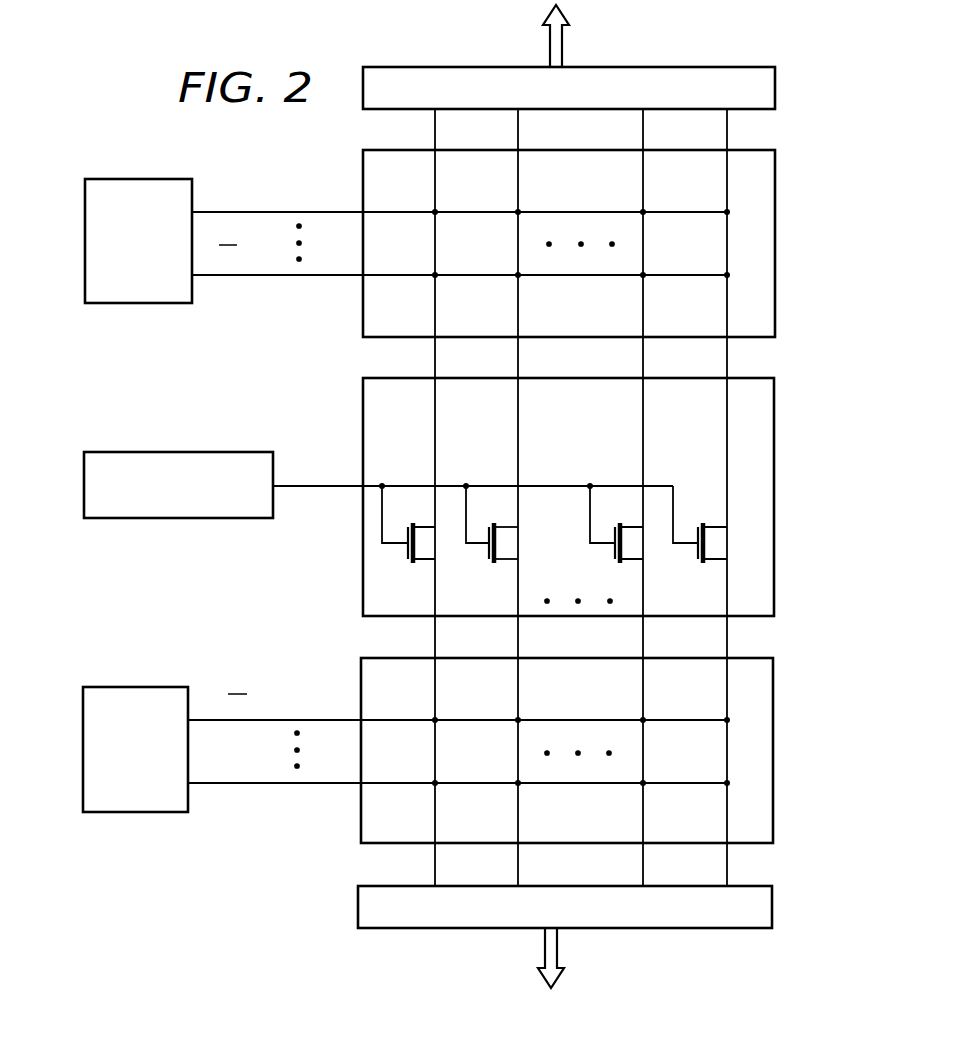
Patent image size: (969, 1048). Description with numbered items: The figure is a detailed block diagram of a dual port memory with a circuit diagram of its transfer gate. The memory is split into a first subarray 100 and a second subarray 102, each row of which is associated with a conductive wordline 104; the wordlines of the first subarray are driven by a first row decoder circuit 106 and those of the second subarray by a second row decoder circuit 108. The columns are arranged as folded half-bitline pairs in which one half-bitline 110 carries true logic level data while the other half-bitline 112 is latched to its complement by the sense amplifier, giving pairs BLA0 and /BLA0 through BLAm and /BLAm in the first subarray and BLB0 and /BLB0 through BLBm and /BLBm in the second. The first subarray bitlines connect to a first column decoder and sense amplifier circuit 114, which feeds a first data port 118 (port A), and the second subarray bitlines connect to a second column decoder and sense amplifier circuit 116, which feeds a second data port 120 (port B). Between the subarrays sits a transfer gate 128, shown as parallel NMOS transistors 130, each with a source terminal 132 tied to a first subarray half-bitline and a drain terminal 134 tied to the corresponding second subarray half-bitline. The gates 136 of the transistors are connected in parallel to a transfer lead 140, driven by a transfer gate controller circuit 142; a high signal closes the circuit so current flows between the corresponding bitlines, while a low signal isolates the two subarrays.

The first subarray 100 is at (776, 223).
The second subarray 102 is at (775, 780).
The wordline 104 is at (320, 211).
The first row decoder circuit 106 is at (118, 179).
The second row decoder circuit 108 is at (105, 812).
The half-bitline 110 is at (434, 374).
The half-bitline 112 is at (518, 374).
The first column decoder and sense amplifier circuit 114 is at (776, 91).
The second column decoder and sense amplifier circuit 116 is at (774, 927).
The first data port 118 is at (564, 47).
The second data port 120 is at (558, 948).
The transfer gate 128 is at (602, 497).
The NMOS type transistor 130 is at (521, 521).
The source terminal 132 is at (513, 527).
The drain terminal 134 is at (516, 561).
The gate 136 is at (466, 485).
The transfer lead 140 is at (318, 485).
The transfer gate controller circuit 142 is at (84, 484).